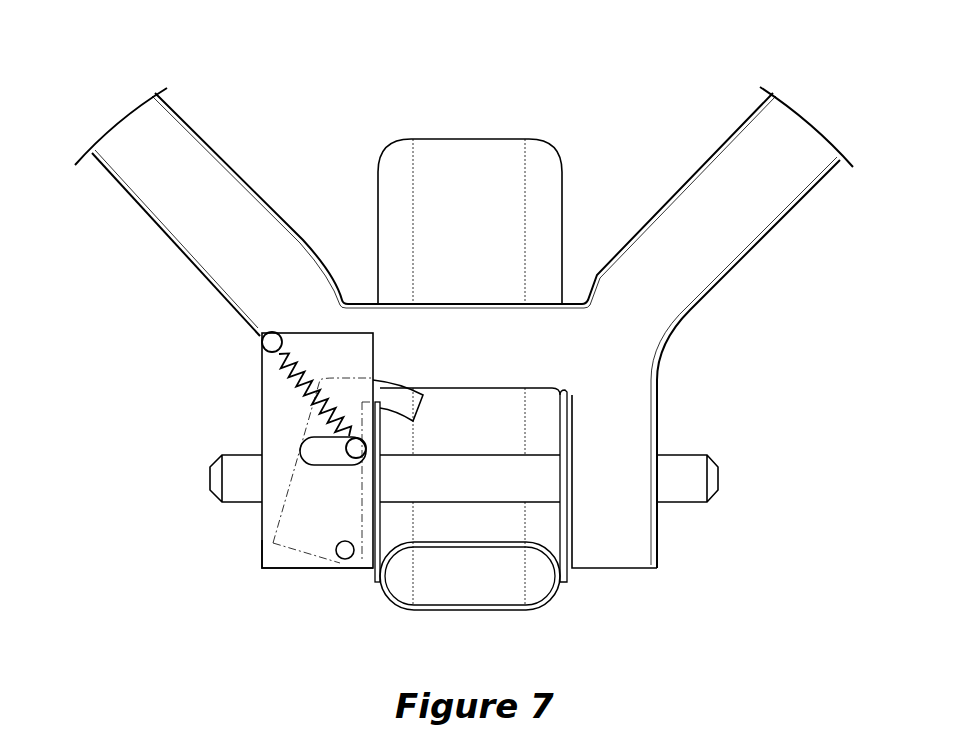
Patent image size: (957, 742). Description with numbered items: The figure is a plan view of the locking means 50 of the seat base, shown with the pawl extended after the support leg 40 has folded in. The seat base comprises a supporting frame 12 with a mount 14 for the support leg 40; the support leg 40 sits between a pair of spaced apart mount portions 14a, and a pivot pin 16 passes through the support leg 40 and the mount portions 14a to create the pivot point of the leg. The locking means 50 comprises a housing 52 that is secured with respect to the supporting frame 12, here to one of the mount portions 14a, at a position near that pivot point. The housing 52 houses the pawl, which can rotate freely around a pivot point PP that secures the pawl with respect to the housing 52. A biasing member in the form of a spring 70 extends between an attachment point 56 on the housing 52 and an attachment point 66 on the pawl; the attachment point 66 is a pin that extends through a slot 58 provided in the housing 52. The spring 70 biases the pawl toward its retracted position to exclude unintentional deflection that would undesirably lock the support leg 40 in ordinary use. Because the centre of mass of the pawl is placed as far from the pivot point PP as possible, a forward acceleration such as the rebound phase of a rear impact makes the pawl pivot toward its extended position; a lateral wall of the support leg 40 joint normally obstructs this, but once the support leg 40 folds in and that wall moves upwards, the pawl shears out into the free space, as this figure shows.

The supporting frame 12 is at (212, 183).
The mount 14 is at (667, 569).
The mount portions 14a is at (614, 552).
The pivot pin 16 is at (210, 478).
The support leg 40 is at (481, 183).
The locking means 50 is at (255, 537).
The housing 52 is at (278, 560).
The attachment point 56 is at (263, 342).
The slot 58 is at (305, 462).
The attachment point 66 is at (346, 442).
The spring 70 is at (285, 388).
The pivot point PP is at (343, 559).